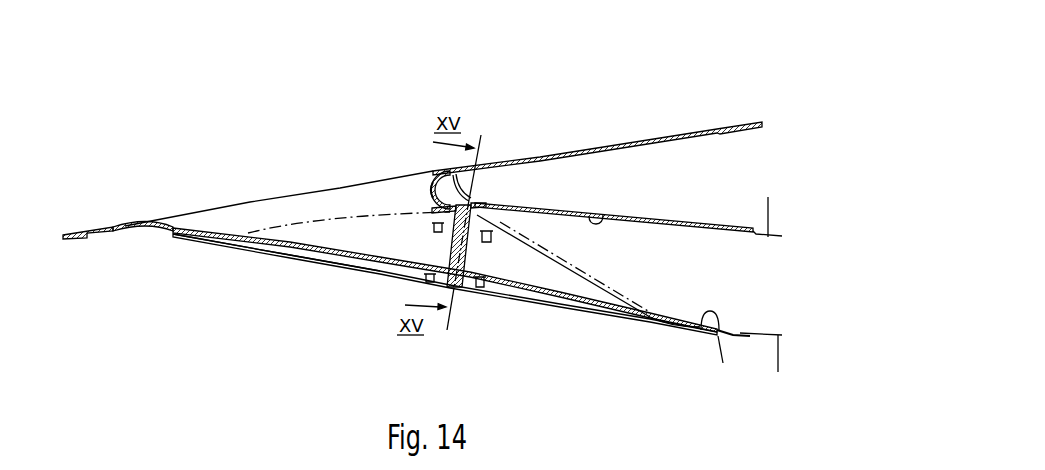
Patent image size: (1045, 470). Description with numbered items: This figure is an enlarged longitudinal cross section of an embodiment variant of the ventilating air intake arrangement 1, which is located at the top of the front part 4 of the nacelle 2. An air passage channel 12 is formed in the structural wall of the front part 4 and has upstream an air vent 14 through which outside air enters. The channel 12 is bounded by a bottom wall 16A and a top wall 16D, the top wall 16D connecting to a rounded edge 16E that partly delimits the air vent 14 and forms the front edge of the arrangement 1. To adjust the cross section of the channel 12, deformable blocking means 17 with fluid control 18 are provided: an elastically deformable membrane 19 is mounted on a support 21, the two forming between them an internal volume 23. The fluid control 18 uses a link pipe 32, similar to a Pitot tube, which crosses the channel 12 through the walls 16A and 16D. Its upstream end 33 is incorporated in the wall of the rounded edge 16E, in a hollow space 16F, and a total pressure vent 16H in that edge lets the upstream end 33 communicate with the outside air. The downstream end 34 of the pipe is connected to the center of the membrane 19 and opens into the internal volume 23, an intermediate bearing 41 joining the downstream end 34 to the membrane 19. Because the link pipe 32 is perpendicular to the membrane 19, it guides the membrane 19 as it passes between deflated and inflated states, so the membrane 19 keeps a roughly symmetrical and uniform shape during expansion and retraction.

The ventilating air intake arrangement 1 is at (290, 178).
The nacelle 2 is at (637, 128).
The front part 4 is at (97, 228).
The air passage channel 12 is at (675, 264).
The air vent 14 is at (243, 207).
The bottom wall 16A is at (712, 333).
The top wall 16D is at (603, 216).
The rounded edge 16E is at (434, 174).
The hollow space 16F is at (469, 197).
The total pressure vent 16H is at (431, 188).
The deformable blocking means 17 is at (322, 271).
The fluid control 18 is at (448, 211).
The elastically deformable membrane 19 is at (530, 290).
The support 21 is at (585, 312).
The internal volume 23 is at (376, 268).
The link pipe 32 is at (454, 242).
The upstream end 33 is at (477, 201).
The downstream end 34 is at (457, 296).
The intermediate bearing 41 is at (470, 263).